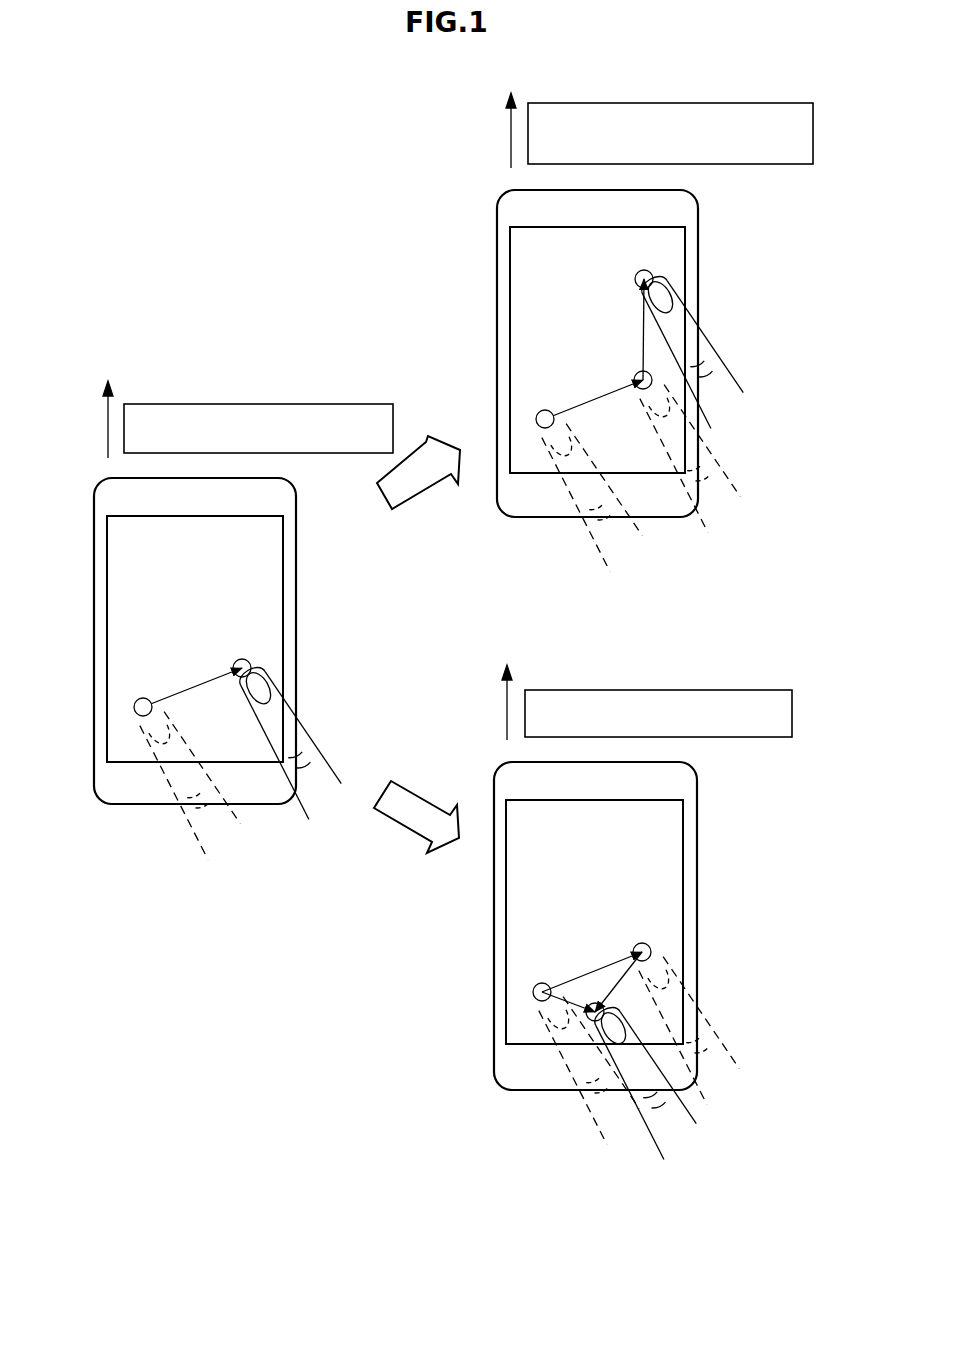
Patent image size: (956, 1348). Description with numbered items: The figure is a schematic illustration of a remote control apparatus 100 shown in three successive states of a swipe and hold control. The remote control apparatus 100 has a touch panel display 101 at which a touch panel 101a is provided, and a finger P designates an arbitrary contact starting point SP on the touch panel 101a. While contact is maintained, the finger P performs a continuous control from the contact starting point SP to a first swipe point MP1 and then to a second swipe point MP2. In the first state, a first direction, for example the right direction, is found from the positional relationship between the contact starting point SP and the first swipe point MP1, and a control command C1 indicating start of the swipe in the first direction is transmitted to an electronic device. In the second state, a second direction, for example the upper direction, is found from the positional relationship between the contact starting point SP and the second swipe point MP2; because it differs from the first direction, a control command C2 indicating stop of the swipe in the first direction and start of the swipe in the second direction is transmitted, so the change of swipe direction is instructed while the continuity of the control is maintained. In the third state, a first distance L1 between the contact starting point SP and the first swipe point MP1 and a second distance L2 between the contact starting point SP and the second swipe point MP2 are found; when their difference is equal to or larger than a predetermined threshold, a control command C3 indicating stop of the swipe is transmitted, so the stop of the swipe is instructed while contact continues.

The remote control apparatus 100 is at (298, 496).
The touch panel display 101 is at (460, 632).
The touch panel 101a is at (283, 538).
The control command C1 is at (268, 404).
The control command C2 is at (672, 104).
The control command C3 is at (667, 690).
The contact starting point SP is at (134, 707).
The first swipe point MP1 is at (250, 664).
The second swipe point MP2 is at (652, 274).
The first distance L1 is at (592, 970).
The second distance L2 is at (568, 996).
The finger P is at (329, 771).